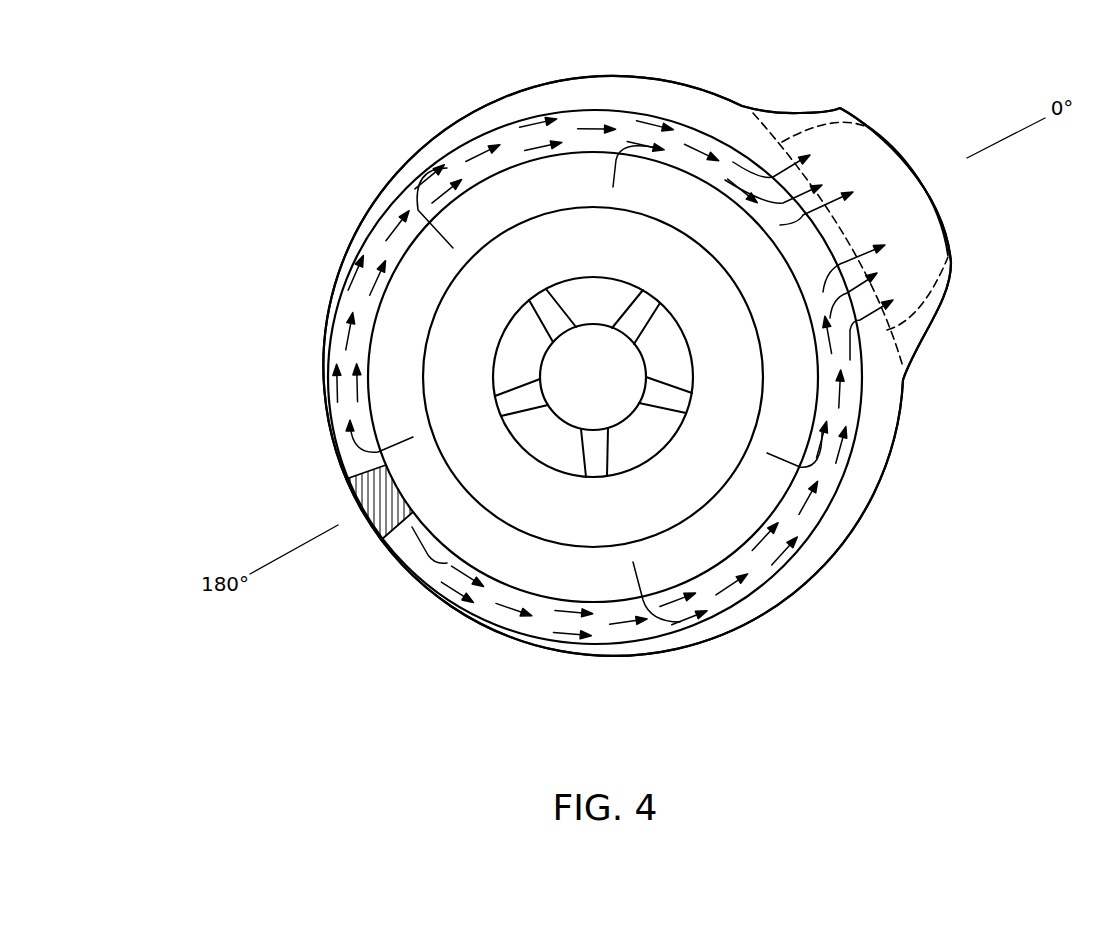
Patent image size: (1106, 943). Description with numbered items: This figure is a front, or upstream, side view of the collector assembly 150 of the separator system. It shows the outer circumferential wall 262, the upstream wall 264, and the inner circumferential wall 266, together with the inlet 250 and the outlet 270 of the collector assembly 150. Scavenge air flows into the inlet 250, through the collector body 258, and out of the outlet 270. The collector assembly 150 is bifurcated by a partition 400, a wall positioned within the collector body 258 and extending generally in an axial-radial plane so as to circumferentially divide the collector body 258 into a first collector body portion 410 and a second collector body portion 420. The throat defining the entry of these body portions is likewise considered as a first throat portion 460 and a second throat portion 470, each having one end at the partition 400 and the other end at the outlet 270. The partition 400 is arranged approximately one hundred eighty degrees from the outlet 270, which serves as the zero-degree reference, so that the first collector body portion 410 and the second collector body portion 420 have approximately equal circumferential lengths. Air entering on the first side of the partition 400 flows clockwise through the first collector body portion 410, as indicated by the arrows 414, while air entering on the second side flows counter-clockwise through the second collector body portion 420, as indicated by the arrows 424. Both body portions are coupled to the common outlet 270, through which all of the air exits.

The collector assembly 150 is at (275, 170).
The collector body 258 is at (354, 238).
The outer circumferential wall 262 is at (489, 114).
The upstream wall 264 is at (334, 326).
The inlet 250 is at (498, 577).
The inner circumferential wall 266 is at (686, 228).
The outlet 270 is at (917, 152).
The arrows 414 is at (350, 291).
The arrows 424 is at (561, 633).
The second collector body portion 420 is at (614, 632).
The first throat portion 460 is at (370, 350).
The partition 400 is at (348, 496).
The second throat portion 470 is at (408, 541).
The first collector body portion 410 is at (313, 381).